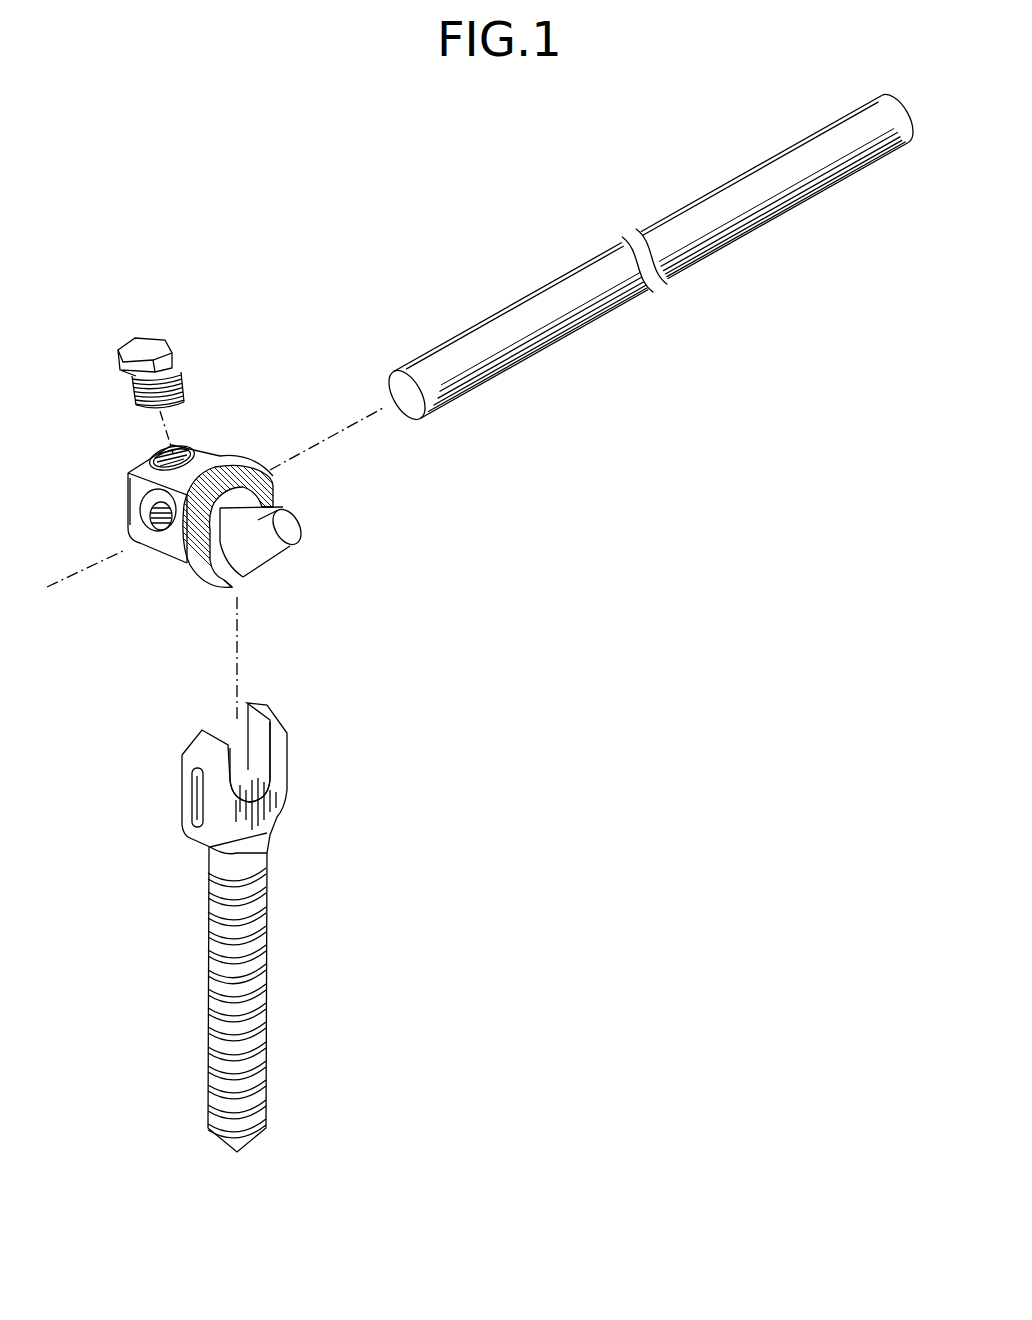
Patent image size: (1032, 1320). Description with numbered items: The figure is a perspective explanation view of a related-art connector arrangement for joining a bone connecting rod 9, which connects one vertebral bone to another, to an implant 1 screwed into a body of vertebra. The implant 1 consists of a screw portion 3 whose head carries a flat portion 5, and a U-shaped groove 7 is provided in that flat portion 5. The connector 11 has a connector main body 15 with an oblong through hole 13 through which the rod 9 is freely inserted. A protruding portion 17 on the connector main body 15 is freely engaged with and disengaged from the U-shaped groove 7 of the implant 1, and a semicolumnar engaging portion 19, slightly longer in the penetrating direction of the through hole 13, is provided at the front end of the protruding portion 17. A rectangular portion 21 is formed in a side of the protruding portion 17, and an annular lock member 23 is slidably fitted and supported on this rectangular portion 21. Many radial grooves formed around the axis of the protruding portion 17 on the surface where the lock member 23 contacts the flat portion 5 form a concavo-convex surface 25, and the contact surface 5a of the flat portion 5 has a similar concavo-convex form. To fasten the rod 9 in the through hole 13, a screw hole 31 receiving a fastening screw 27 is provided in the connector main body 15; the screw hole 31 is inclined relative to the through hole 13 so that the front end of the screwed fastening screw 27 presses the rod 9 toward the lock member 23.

The implant 1 is at (297, 882).
The screw portion 3 is at (248, 973).
The flat portion 5 is at (283, 780).
The contact surface 5a is at (182, 795).
The U-shaped groove 7 is at (227, 723).
The bone connecting rod 9 is at (552, 293).
The connector 11 is at (218, 440).
The oblong through hole 13 is at (143, 504).
The connector main body 15 is at (132, 484).
The protruding portion 17 is at (237, 523).
The semicolumnar engaging portion 19 is at (297, 530).
The rectangular portion 21 is at (283, 500).
The annular lock member 23 is at (233, 468).
The concavo-convex surface 25 is at (203, 588).
The fastening screw 27 is at (150, 340).
The screw hole 31 is at (153, 450).